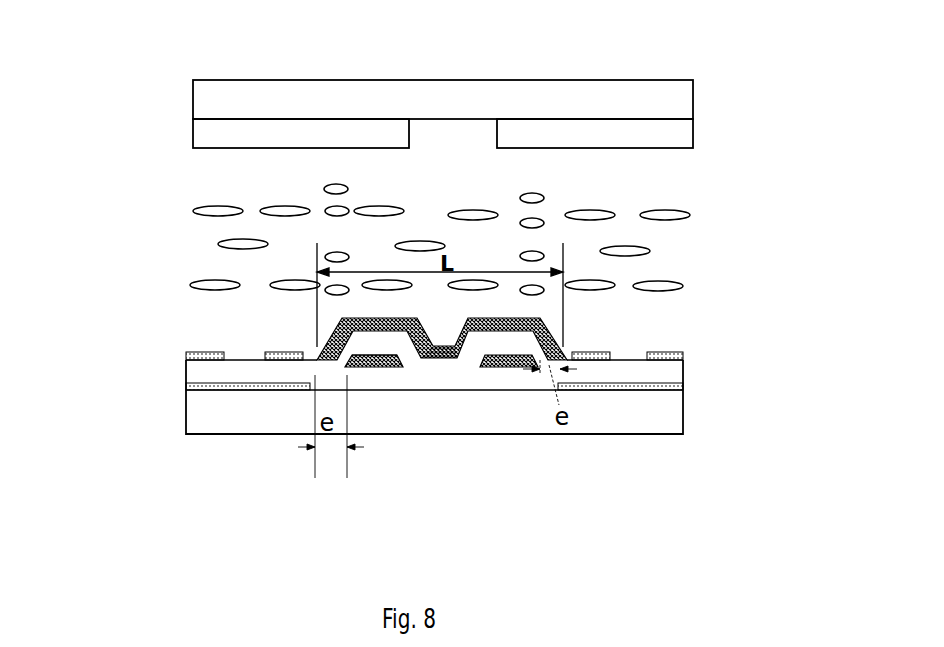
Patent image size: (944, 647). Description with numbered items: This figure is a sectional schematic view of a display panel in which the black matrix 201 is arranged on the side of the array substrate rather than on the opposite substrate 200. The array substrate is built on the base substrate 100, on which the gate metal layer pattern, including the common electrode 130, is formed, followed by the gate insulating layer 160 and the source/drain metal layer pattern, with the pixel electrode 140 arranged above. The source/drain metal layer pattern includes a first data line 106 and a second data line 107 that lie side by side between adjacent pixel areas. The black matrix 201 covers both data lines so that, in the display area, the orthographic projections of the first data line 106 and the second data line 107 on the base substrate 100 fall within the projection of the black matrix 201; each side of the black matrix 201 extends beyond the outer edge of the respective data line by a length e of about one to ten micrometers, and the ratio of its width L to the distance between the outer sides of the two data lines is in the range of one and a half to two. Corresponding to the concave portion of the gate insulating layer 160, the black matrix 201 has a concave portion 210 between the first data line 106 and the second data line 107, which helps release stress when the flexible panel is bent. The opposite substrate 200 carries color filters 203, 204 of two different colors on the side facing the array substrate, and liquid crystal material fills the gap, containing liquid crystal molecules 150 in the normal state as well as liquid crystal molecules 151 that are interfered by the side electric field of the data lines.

The base substrate 100 is at (673, 425).
The first data line 106 is at (347, 368).
The second data line 107 is at (532, 372).
The common electrode 130 is at (677, 385).
The pixel electrode 140 is at (683, 353).
The liquid crystal molecules in normal state 150 is at (673, 213).
The liquid crystal molecules interfered by the side electric field 151 is at (330, 289).
The gate insulating layer 160 is at (405, 350).
The opposite substrate 200 is at (227, 97).
The black matrix 201 is at (545, 330).
The color filter 203 is at (227, 130).
The color filter 204 is at (677, 140).
The concave portion 210 is at (443, 357).